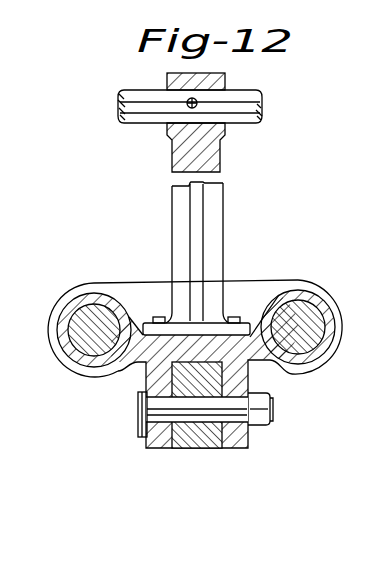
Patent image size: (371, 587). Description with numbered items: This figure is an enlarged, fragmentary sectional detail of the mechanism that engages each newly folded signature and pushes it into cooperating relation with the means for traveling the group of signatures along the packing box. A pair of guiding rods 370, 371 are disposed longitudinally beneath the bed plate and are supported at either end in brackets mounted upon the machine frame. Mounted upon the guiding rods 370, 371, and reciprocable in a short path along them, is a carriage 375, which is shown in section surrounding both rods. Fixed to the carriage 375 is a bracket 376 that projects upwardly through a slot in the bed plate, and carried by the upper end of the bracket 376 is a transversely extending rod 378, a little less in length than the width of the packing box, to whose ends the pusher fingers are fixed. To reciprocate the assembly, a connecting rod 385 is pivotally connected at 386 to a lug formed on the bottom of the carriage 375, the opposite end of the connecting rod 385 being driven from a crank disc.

The guiding rod 370 is at (309, 338).
The guiding rod 371 is at (68, 357).
The carriage 375 is at (141, 288).
The bracket 376 is at (215, 233).
The rod 378 is at (148, 110).
The connecting rod 385 is at (210, 440).
The pivotal connection 386 is at (197, 410).